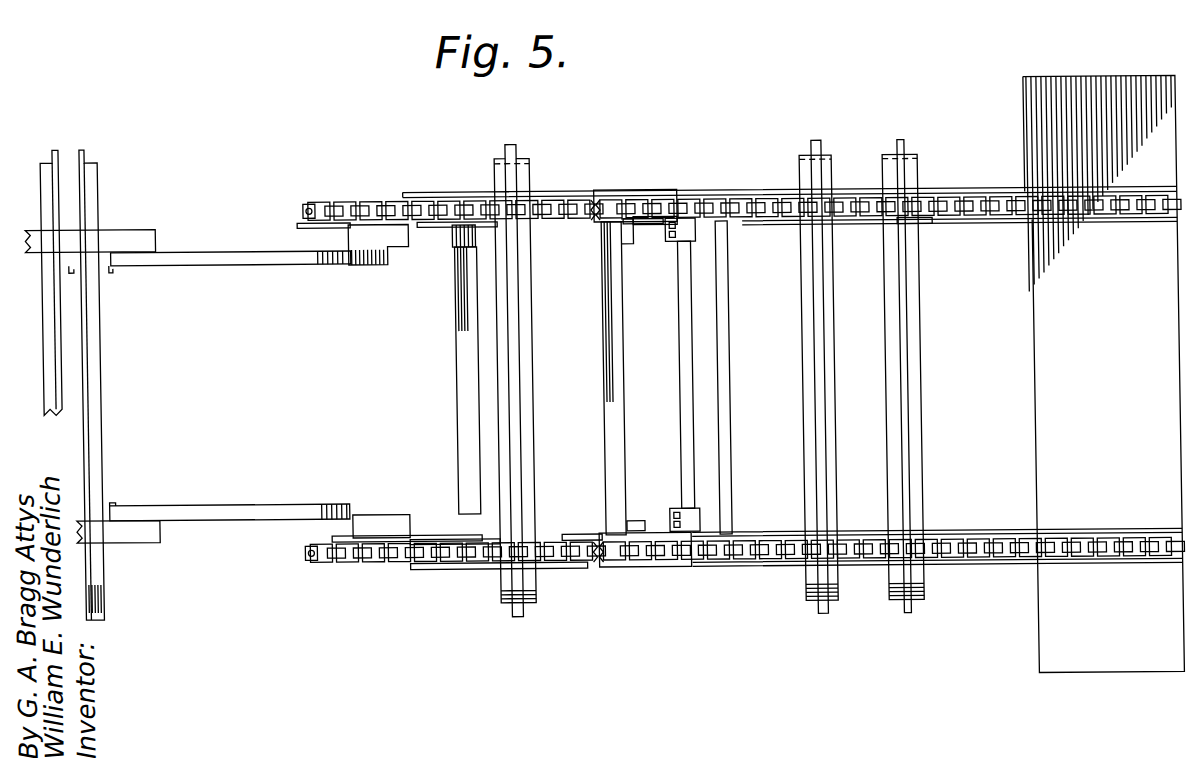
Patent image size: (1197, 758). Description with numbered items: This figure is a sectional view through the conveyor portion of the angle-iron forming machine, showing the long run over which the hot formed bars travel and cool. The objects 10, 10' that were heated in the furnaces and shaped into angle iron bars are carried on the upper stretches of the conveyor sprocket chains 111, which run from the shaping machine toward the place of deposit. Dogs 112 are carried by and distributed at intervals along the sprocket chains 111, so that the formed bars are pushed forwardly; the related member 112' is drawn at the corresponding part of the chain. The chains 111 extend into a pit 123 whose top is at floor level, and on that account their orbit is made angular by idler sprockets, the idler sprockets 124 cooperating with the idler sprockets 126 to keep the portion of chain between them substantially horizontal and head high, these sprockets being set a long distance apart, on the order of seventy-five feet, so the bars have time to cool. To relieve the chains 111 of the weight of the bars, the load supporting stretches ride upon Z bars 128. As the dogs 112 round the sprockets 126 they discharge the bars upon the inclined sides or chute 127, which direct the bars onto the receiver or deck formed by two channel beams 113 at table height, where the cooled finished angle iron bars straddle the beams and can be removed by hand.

The object to be heated 10 is at (467, 374).
The object to be heated 10' is at (521, 379).
The conveyor sprocket chain 111 is at (1020, 206).
The dog 112 is at (618, 387).
The chain guide plate 112' is at (308, 237).
The channel beam 113 is at (130, 232).
The pit 123 is at (1059, 156).
The idler sprocket 124 is at (710, 201).
The idler sprocket 126 is at (313, 207).
The inclined side or chute 127 is at (239, 247).
The Z bar 128 is at (1123, 222).